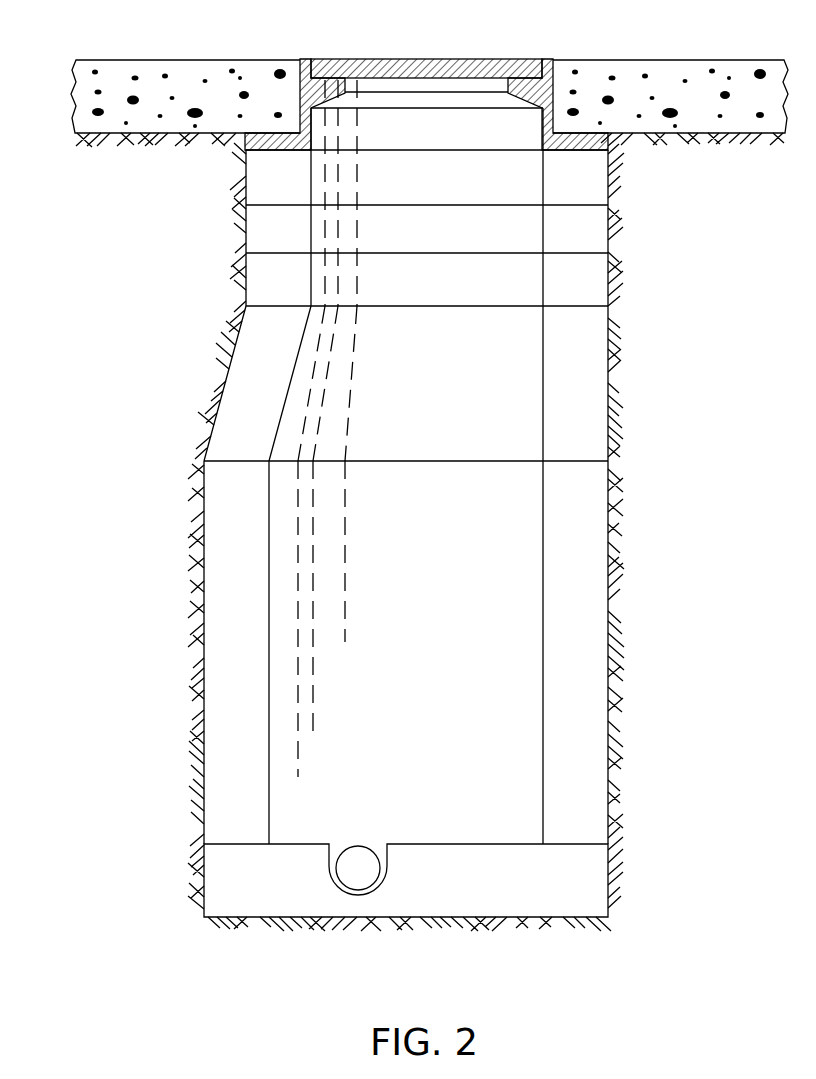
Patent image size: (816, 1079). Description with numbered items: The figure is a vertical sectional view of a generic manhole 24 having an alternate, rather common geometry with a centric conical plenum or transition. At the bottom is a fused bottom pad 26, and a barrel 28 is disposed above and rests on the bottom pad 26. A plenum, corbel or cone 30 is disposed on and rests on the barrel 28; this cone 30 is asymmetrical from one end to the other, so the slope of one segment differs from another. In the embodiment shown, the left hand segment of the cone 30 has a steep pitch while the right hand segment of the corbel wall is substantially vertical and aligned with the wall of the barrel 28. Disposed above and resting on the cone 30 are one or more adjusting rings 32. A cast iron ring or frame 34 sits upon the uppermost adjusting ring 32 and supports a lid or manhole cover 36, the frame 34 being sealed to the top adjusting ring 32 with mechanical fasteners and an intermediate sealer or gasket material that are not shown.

The manhole 24 is at (88, 282).
The fused bottom pad 26 is at (406, 880).
The barrel 28 is at (578, 678).
The cone 30 is at (582, 386).
The adjusting rings 32 is at (562, 277).
The frame 34 is at (533, 90).
The manhole cover 36 is at (440, 70).